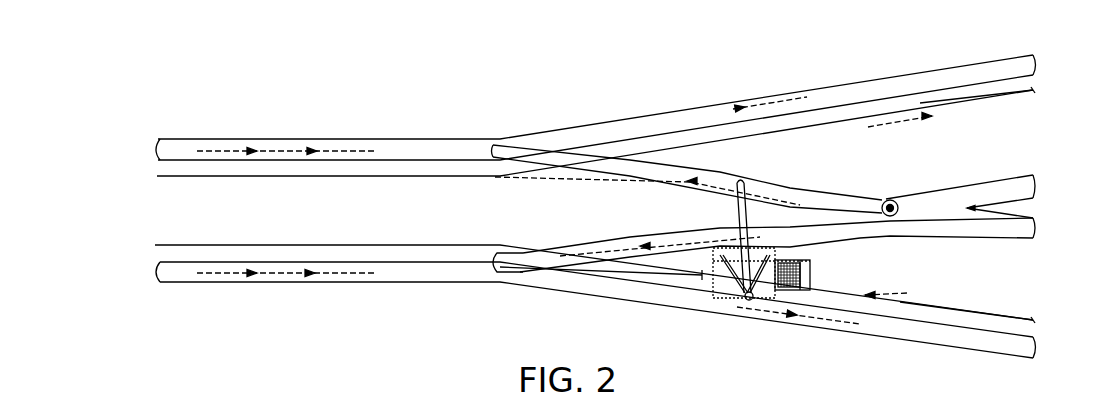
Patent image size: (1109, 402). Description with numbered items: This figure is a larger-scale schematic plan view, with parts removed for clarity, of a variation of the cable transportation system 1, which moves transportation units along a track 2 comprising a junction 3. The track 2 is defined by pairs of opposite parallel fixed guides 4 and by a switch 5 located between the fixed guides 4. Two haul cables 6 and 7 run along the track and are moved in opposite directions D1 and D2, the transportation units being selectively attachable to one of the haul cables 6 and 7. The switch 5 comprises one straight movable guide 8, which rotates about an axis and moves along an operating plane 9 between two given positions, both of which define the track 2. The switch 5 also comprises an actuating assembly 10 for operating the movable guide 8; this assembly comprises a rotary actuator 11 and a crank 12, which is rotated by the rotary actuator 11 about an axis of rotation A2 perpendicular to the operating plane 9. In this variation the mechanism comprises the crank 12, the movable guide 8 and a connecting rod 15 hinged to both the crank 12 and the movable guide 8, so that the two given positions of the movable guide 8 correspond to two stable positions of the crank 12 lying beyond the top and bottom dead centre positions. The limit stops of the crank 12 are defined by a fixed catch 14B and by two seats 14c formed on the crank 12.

The cable transportation system 1 is at (232, 92).
The track 2 is at (212, 318).
The junction 3 is at (535, 306).
The fixed guides 4 is at (183, 152).
The switch 5 is at (862, 257).
The haul cable 6 is at (1006, 97).
The haul cable 7 is at (990, 315).
The movable guide 8 is at (797, 190).
The operating plane 9 is at (808, 157).
The actuating assembly 10 is at (833, 257).
The rotary actuator 11 is at (775, 251).
The crank 12 is at (732, 300).
The fixed catch 14B is at (812, 271).
The seats 14c is at (768, 257).
The connecting rod 15 is at (728, 250).
The axis of rotation A2 is at (718, 292).
The direction D1 is at (868, 127).
The direction D2 is at (907, 293).